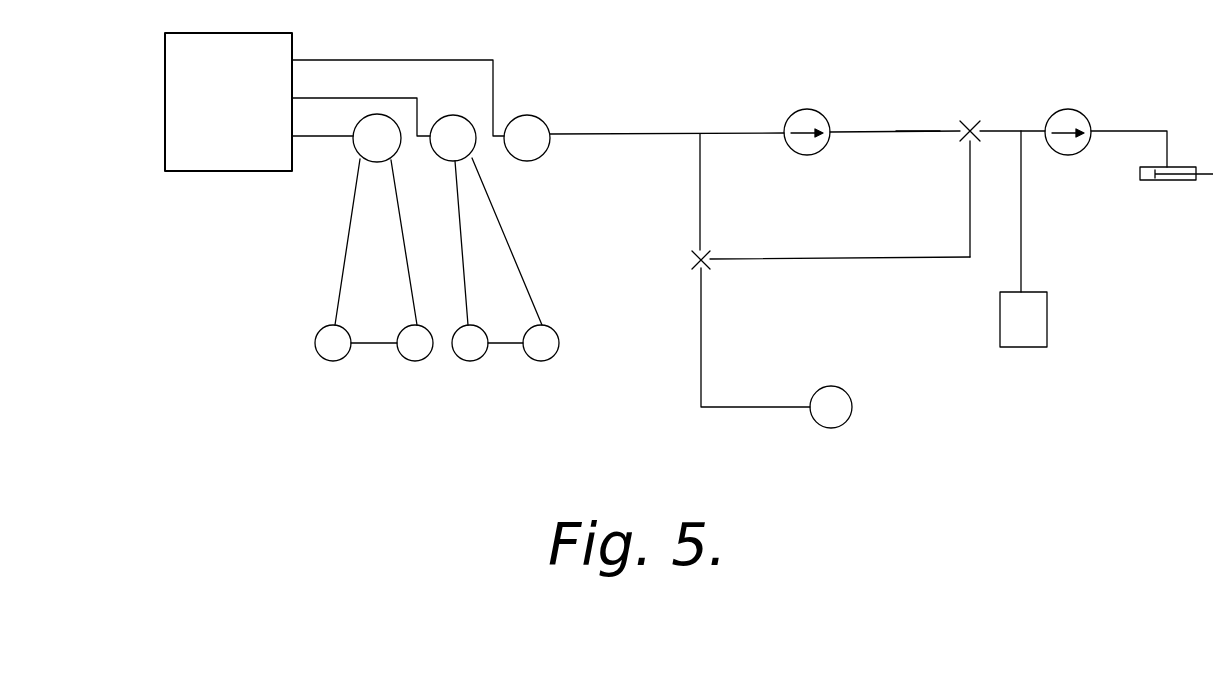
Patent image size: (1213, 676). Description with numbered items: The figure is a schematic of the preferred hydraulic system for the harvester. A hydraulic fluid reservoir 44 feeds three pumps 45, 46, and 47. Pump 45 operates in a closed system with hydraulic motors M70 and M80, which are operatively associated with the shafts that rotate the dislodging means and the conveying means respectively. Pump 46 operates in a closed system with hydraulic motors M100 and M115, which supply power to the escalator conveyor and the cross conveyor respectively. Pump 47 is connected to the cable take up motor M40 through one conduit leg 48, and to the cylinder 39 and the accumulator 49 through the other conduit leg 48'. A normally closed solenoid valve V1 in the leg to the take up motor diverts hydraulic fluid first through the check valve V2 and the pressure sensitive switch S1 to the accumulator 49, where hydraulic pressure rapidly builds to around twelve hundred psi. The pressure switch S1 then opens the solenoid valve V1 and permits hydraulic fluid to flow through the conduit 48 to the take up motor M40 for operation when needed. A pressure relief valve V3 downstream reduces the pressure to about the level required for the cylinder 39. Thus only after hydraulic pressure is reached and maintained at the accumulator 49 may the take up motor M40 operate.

The hydraulic fluid reservoir 44 is at (278, 50).
The pump 45 is at (368, 143).
The pump 46 is at (452, 144).
The pump 47 is at (533, 150).
The hydraulic motor M70 is at (327, 345).
The hydraulic motor M80 is at (413, 349).
The hydraulic motor M100 is at (476, 350).
The hydraulic motor M115 is at (544, 350).
The normally closed solenoid valve V1 is at (707, 252).
The check valve V2 is at (823, 115).
The conduit leg 48' is at (933, 106).
The pressure sensitive switch S1 is at (962, 137).
The pressure relief valve V3 is at (1086, 113).
The cylinder 39 is at (1150, 181).
The accumulator 49 is at (1047, 322).
The conduit leg 48 is at (755, 270).
The cable take up motor M40 is at (852, 409).